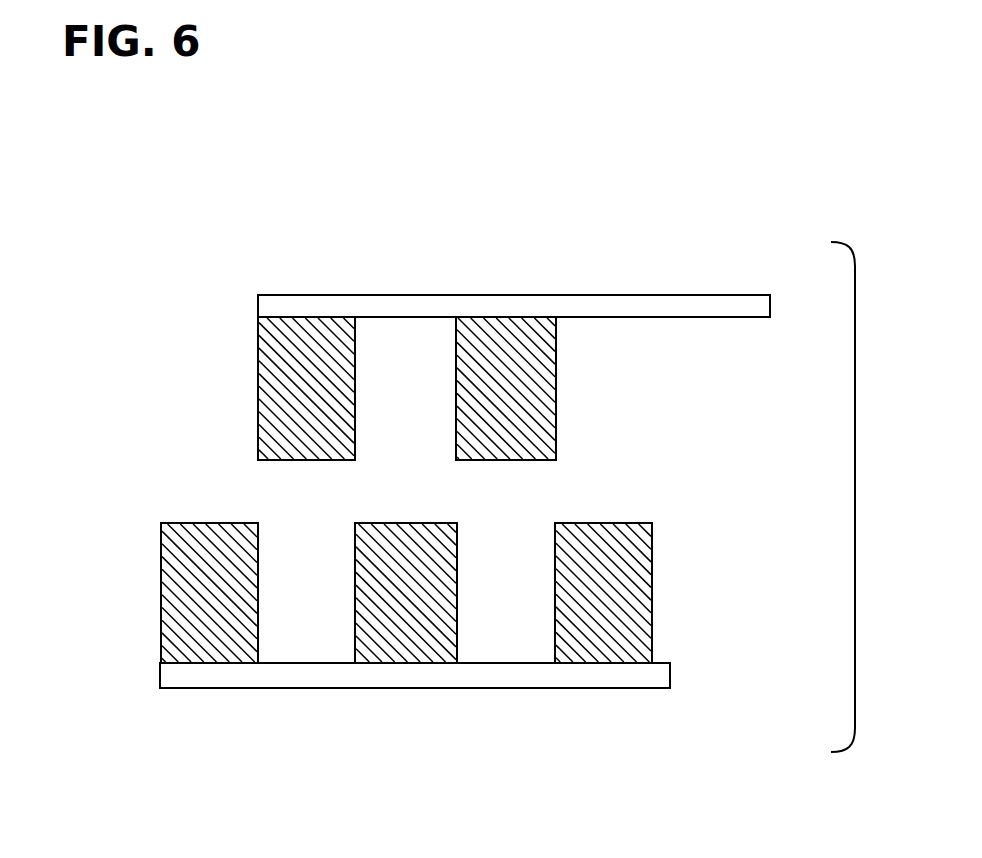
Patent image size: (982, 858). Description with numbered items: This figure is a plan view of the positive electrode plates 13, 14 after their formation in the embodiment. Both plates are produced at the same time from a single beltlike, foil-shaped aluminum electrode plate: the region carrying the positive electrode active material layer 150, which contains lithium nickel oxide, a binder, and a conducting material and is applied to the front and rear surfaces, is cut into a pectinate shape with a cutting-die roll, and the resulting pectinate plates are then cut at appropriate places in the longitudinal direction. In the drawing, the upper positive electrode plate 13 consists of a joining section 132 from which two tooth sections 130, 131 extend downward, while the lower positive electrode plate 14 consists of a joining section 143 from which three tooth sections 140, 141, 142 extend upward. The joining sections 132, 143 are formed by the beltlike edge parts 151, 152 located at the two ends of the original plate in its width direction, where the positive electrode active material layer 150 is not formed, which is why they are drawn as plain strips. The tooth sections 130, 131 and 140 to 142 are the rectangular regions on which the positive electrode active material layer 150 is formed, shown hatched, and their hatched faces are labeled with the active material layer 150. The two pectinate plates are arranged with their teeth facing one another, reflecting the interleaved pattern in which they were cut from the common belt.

The positive electrode plate 13 is at (478, 345).
The tooth section 130 is at (262, 386).
The tooth section 131 is at (458, 393).
The joining section 132 is at (514, 277).
The edge part 151 is at (607, 306).
The positive electrode plate 14 is at (386, 639).
The tooth section 140 is at (165, 626).
The tooth section 141 is at (356, 650).
The tooth section 142 is at (556, 650).
The joining section 143 is at (415, 709).
The edge part 152 is at (510, 680).
The positive electrode active material layer 150 is at (352, 428).